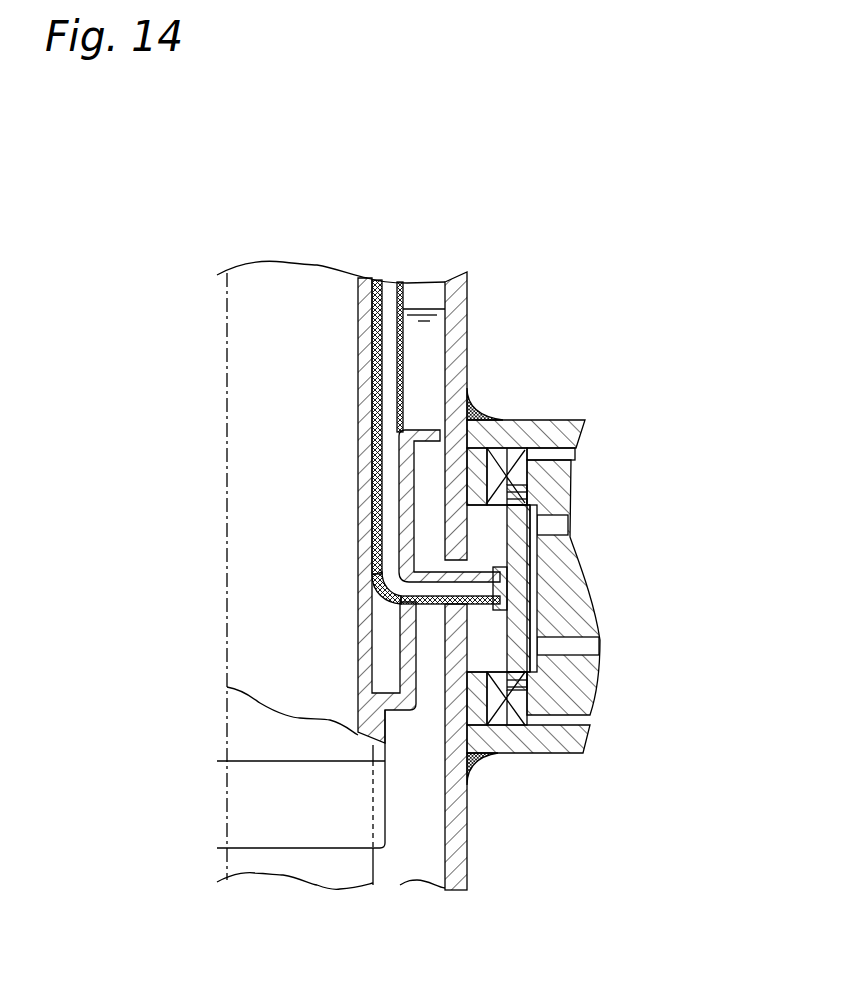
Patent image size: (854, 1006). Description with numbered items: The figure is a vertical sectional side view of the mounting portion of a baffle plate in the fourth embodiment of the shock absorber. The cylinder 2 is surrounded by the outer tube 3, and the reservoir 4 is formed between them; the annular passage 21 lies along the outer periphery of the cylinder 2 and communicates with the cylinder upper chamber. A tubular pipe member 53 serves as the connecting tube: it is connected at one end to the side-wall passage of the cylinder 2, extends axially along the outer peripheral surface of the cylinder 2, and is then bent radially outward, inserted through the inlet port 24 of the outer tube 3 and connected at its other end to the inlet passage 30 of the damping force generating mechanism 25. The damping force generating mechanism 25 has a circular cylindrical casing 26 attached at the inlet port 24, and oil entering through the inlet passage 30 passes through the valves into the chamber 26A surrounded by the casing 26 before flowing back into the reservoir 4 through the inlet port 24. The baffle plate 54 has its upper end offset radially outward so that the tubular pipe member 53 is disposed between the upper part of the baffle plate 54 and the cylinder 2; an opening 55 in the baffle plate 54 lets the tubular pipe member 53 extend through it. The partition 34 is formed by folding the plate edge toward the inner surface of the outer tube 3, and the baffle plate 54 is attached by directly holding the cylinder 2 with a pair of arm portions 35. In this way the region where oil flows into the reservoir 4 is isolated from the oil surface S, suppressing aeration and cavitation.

The cylinder 2 is at (367, 277).
The annular passage 21 is at (390, 293).
The surface of hydraulic oil S is at (420, 309).
The outer tube 3 is at (453, 283).
The reservoir 4 is at (432, 828).
The tubular pipe member 53 is at (402, 342).
The baffle plate 54 is at (425, 430).
The opening 55 is at (380, 582).
The partition 34 is at (468, 385).
The casing 26 is at (548, 420).
The chamber 26A is at (563, 455).
The damping force generating mechanism 25 is at (600, 430).
The inlet passage 30 is at (517, 590).
The inlet port 24 is at (537, 635).
The arm portions 35 is at (293, 830).